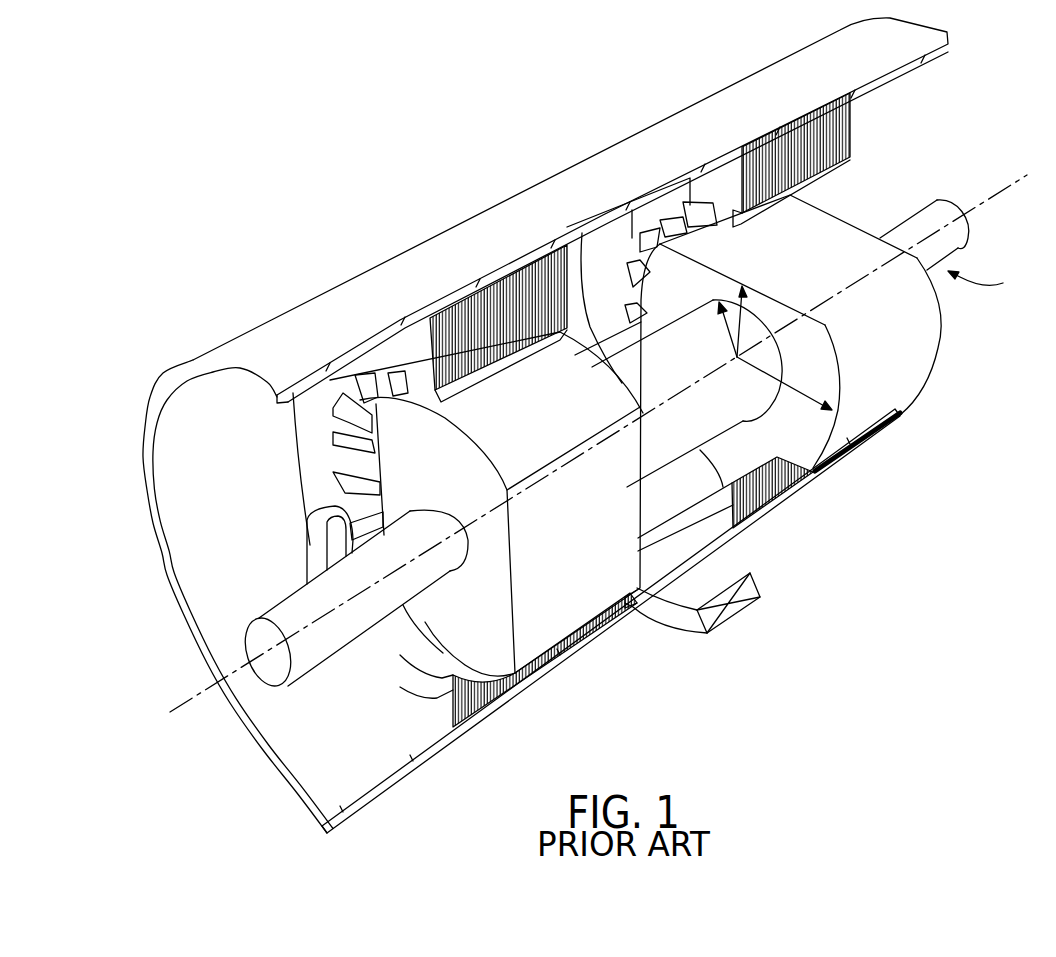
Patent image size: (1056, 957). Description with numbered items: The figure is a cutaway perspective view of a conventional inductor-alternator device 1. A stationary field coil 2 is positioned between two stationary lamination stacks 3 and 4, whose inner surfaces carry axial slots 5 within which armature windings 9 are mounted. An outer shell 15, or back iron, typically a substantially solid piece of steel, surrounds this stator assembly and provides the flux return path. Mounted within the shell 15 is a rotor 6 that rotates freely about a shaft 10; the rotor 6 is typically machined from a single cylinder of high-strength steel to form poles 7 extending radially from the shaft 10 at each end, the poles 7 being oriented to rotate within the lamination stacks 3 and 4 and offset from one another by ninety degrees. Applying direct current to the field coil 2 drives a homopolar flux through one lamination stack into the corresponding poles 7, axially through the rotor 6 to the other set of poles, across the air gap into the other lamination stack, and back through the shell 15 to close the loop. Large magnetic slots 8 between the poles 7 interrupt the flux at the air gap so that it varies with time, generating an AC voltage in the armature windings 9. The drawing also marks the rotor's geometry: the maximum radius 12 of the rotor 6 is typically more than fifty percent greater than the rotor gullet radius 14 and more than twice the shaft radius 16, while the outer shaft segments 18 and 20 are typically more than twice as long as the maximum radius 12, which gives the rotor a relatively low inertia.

The inductor-alternator device 1 is at (478, 193).
The field coil 2 is at (758, 574).
The lamination stack 3 is at (517, 292).
The lamination stack 4 is at (833, 131).
The inner surface axial slots 5 is at (345, 392).
The rotor 6 is at (986, 286).
The poles 7 is at (897, 360).
The magnetic slots 8 is at (820, 233).
The armature windings 9 is at (303, 520).
The shaft 10 is at (935, 200).
The maximum radius of rotor 12 is at (840, 448).
The rotor gullet radius 14 is at (740, 323).
The outer shell 15 is at (447, 737).
The radius of shaft 16 is at (719, 310).
The outer shaft segment 18 is at (940, 247).
The outer shaft segment 20 is at (313, 648).